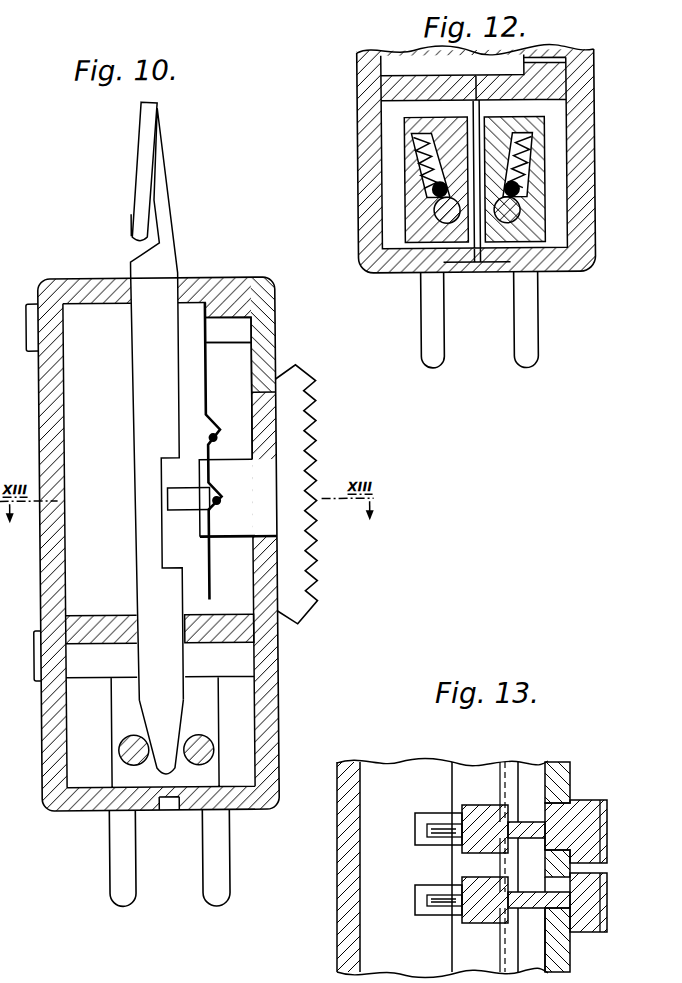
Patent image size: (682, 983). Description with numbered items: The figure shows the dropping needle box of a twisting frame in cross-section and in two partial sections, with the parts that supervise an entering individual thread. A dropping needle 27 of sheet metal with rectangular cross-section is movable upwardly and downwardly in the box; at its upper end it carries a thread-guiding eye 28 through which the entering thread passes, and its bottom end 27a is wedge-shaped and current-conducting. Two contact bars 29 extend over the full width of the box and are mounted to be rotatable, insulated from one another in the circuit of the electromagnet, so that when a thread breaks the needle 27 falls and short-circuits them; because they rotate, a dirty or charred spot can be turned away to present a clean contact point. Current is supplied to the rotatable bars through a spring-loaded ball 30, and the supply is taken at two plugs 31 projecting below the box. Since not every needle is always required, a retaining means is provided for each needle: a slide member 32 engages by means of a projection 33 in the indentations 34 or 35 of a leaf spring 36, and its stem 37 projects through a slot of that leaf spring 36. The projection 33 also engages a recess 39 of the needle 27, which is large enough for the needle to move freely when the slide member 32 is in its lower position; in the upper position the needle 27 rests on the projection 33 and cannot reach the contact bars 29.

In FIG. 10, the dropping needle 27 is at (168, 262).
In FIG. 13, the dropping needle 27 is at (430, 830).
In FIG. 10, the bottom end of needle 27a is at (167, 723).
In FIG. 10, the thread-guiding eye 28 is at (150, 157).
In FIG. 10, the contact bar 29 is at (208, 752).
In FIG. 12, the contact bar 29 is at (447, 214).
In FIG. 12, the spring-loaded ball 30 is at (438, 186).
In FIG. 10, the plug 31 is at (213, 890).
In FIG. 12, the plug 31 is at (520, 337).
In FIG. 10, the slide member 32 is at (295, 555).
In FIG. 13, the slide member 32 is at (593, 823).
In FIG. 10, the projection 33 is at (228, 455).
In FIG. 13, the projection 33 is at (480, 827).
In FIG. 10, the indentation 34 is at (225, 447).
In FIG. 10, the indentation 35 is at (226, 510).
In FIG. 13, the indentation 35 is at (507, 782).
In FIG. 10, the leaf spring 36 is at (208, 380).
In FIG. 13, the leaf spring 36 is at (531, 782).
In FIG. 10, the stem 37 is at (265, 517).
In FIG. 13, the stem 37 is at (563, 817).
In FIG. 10, the recess 39 is at (200, 560).